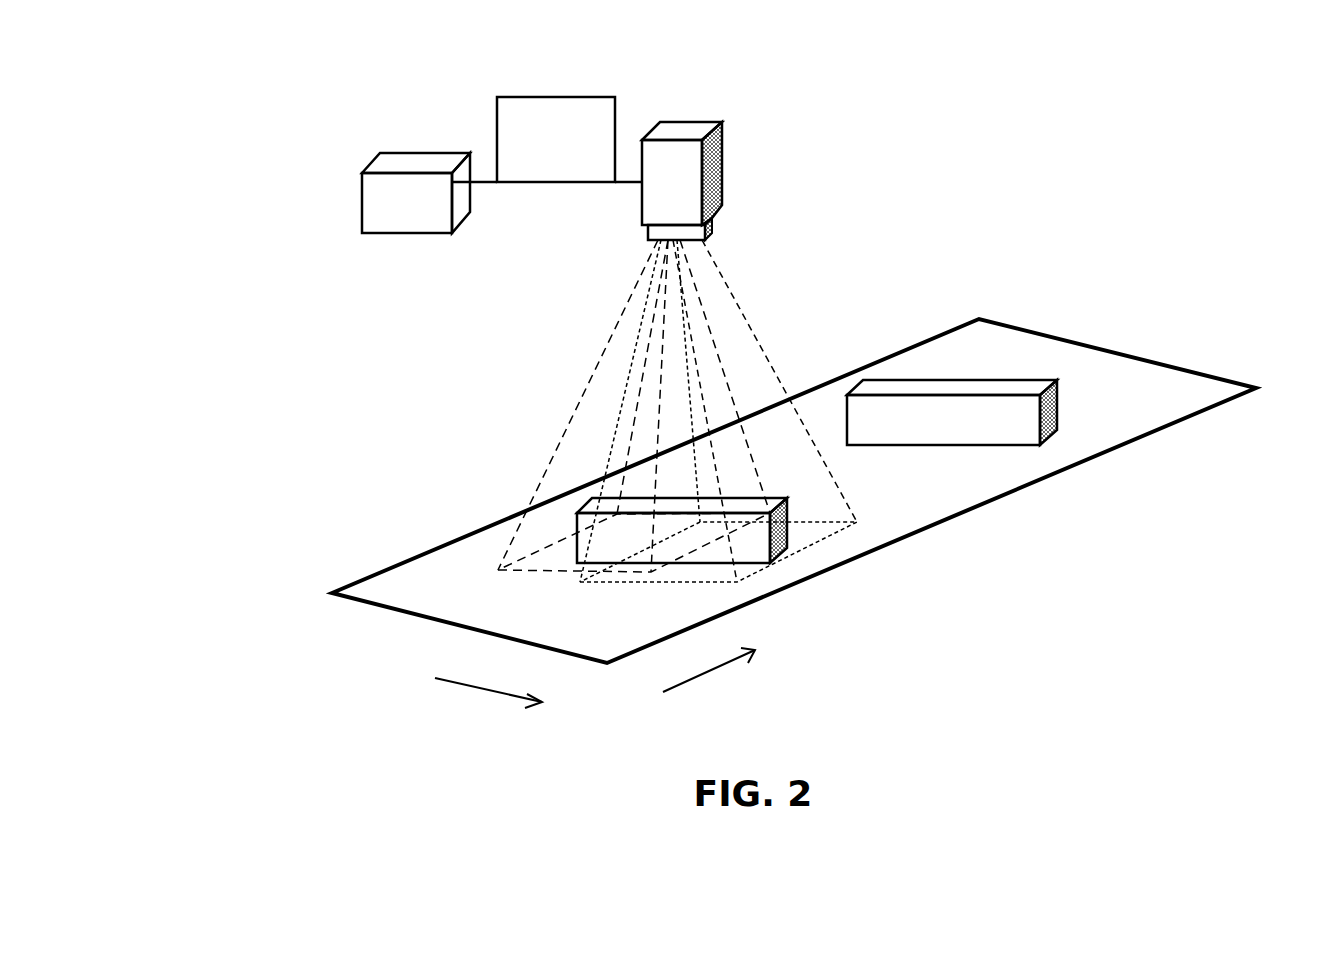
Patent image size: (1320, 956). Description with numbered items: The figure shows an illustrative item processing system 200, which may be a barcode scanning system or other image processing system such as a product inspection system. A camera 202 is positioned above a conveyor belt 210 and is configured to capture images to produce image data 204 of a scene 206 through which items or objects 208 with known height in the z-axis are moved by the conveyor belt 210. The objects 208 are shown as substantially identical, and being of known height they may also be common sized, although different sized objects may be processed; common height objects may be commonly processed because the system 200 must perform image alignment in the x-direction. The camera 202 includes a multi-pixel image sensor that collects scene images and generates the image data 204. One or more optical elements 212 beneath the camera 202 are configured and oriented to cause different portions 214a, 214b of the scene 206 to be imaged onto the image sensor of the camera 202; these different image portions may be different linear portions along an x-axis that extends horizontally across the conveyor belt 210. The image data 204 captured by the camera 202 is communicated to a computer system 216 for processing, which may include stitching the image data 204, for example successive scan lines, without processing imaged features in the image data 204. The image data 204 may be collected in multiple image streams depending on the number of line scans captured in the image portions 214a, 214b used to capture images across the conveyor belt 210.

The item processing system 200 is at (280, 118).
The camera 202 is at (720, 158).
The image data 204 is at (497, 109).
The scene 206 is at (503, 469).
The items or objects 208 is at (970, 378).
The conveyor belt 210 is at (1112, 438).
The optical elements 212 is at (705, 233).
The first portion of the scene 214a is at (562, 542).
The second portion of the scene 214b is at (857, 524).
The computer system 216 is at (362, 210).